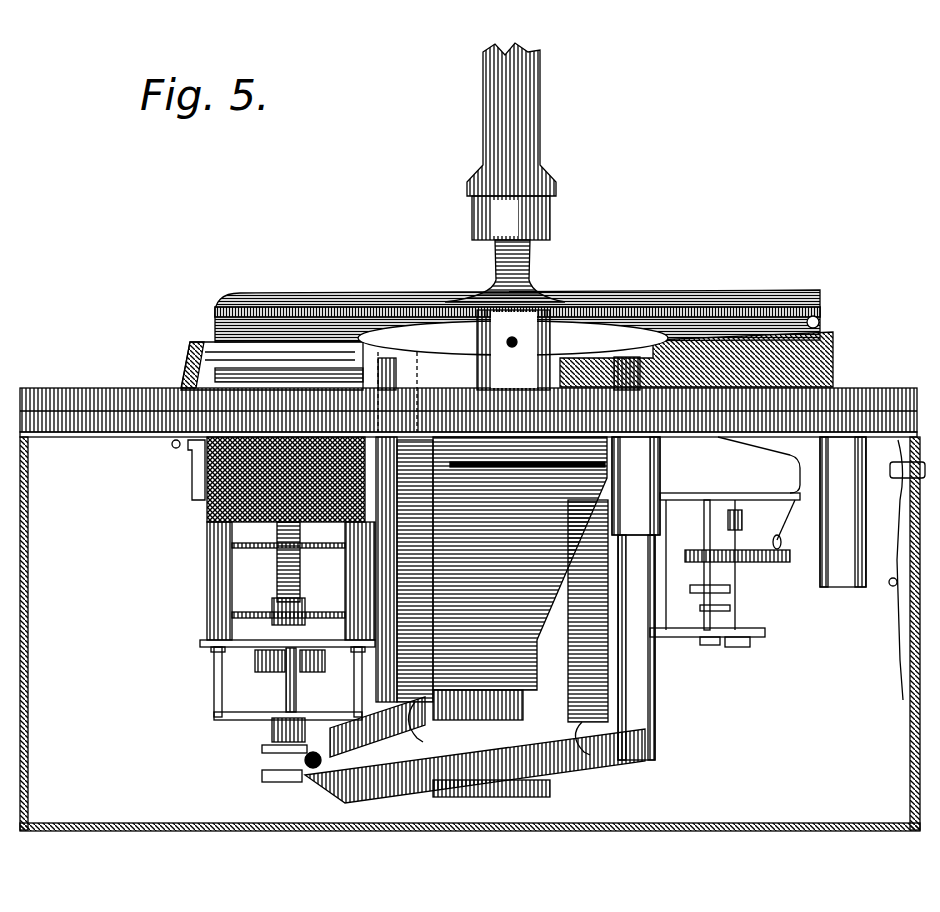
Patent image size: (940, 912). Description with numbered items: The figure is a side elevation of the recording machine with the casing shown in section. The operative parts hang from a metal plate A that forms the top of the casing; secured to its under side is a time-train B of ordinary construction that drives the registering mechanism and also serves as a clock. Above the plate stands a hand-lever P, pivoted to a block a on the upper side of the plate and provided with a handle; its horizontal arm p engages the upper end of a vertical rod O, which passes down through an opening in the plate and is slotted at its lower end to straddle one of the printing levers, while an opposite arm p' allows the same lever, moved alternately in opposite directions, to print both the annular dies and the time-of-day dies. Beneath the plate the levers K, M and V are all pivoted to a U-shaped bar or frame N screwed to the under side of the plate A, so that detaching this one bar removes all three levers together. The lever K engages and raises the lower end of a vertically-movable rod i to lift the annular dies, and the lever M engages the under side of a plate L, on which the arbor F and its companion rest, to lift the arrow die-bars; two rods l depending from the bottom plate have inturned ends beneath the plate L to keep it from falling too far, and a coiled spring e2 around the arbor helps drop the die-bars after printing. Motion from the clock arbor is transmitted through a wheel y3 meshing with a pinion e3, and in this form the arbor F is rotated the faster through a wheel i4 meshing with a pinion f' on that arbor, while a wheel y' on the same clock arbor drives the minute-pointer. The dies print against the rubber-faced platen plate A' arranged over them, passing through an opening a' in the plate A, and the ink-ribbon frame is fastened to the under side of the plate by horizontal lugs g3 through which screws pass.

The metal plate A is at (470, 593).
The platen plate A' is at (256, 365).
The hand-lever P is at (508, 172).
The horizontal arm of lever p is at (517, 300).
The opposite arm of lever p' is at (696, 322).
The vertical rod O is at (513, 338).
The block a is at (513, 350).
The horizontal lugs g3 is at (186, 446).
The opening in supporting plate a' is at (267, 491).
The wheel on arbor y y' is at (288, 557).
The coiled spring e2 is at (300, 562).
The wheel connected with pinion i3 i4 is at (288, 602).
The pinion on arbor F f' is at (297, 606).
The rods l is at (214, 690).
The plate L is at (288, 706).
The pinion on arbor E e3 is at (258, 668).
The wheel on arbor y y3 is at (324, 666).
The arbor F is at (298, 680).
The vertically-movable rod i is at (306, 738).
The lever M is at (262, 750).
The lever K is at (290, 778).
The U-shaped bar or frame N is at (520, 617).
The lever V is at (592, 762).
The time-train B is at (725, 546).